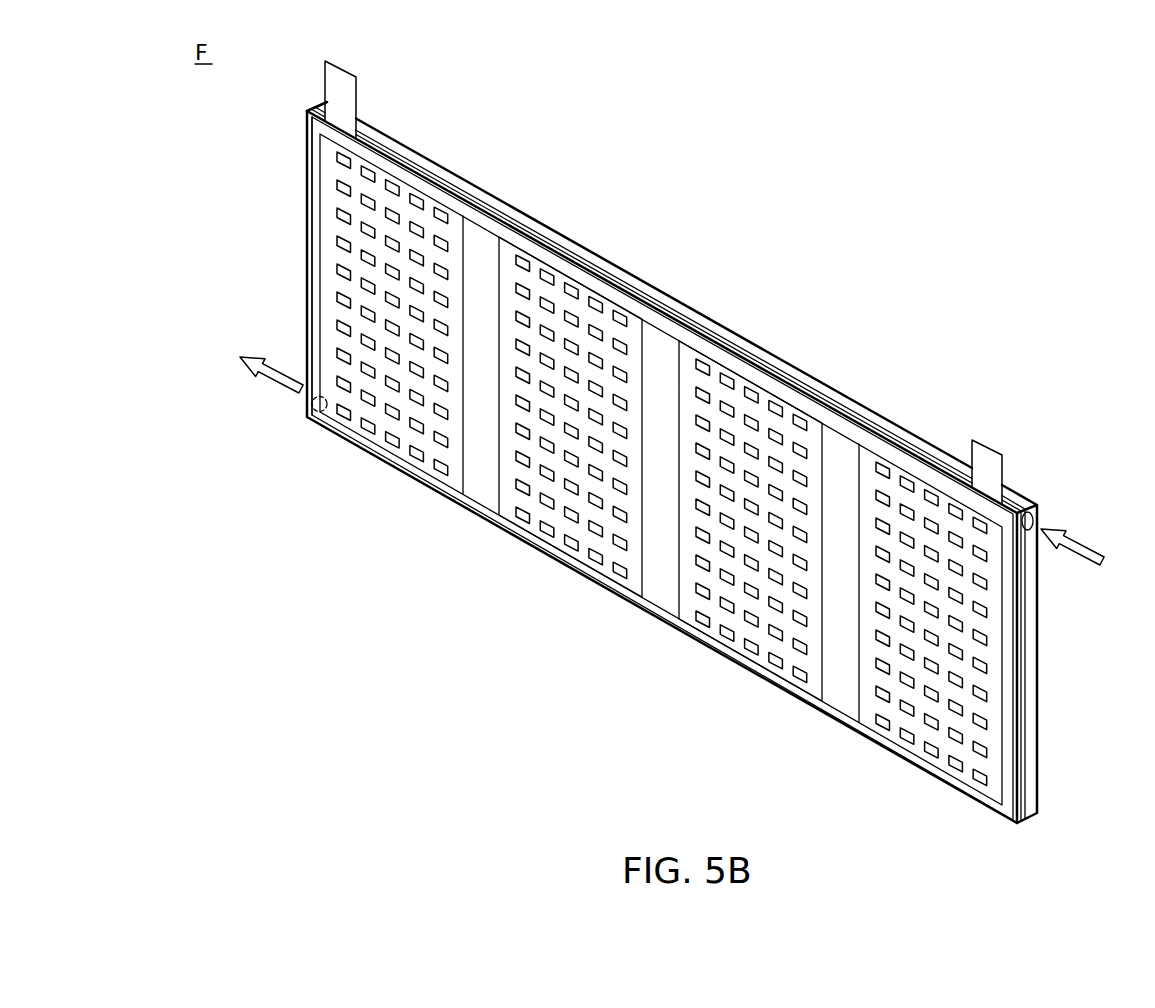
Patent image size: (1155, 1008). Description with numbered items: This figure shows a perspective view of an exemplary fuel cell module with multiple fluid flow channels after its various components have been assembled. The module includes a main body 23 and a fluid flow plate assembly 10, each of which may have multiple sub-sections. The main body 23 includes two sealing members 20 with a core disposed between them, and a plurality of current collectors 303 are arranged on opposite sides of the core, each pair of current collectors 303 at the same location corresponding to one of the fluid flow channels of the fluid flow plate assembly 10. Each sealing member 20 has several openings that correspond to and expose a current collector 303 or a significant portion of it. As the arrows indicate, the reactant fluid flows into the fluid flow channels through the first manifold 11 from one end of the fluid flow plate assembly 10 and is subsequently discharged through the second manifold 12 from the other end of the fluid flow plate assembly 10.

The fluid flow plate assembly 10 is at (1037, 649).
The first manifold 11 is at (1031, 498).
The second manifold 12 is at (314, 412).
The sealing member 20 is at (479, 498).
The main body 23 is at (302, 236).
The current collector 303 is at (511, 258).